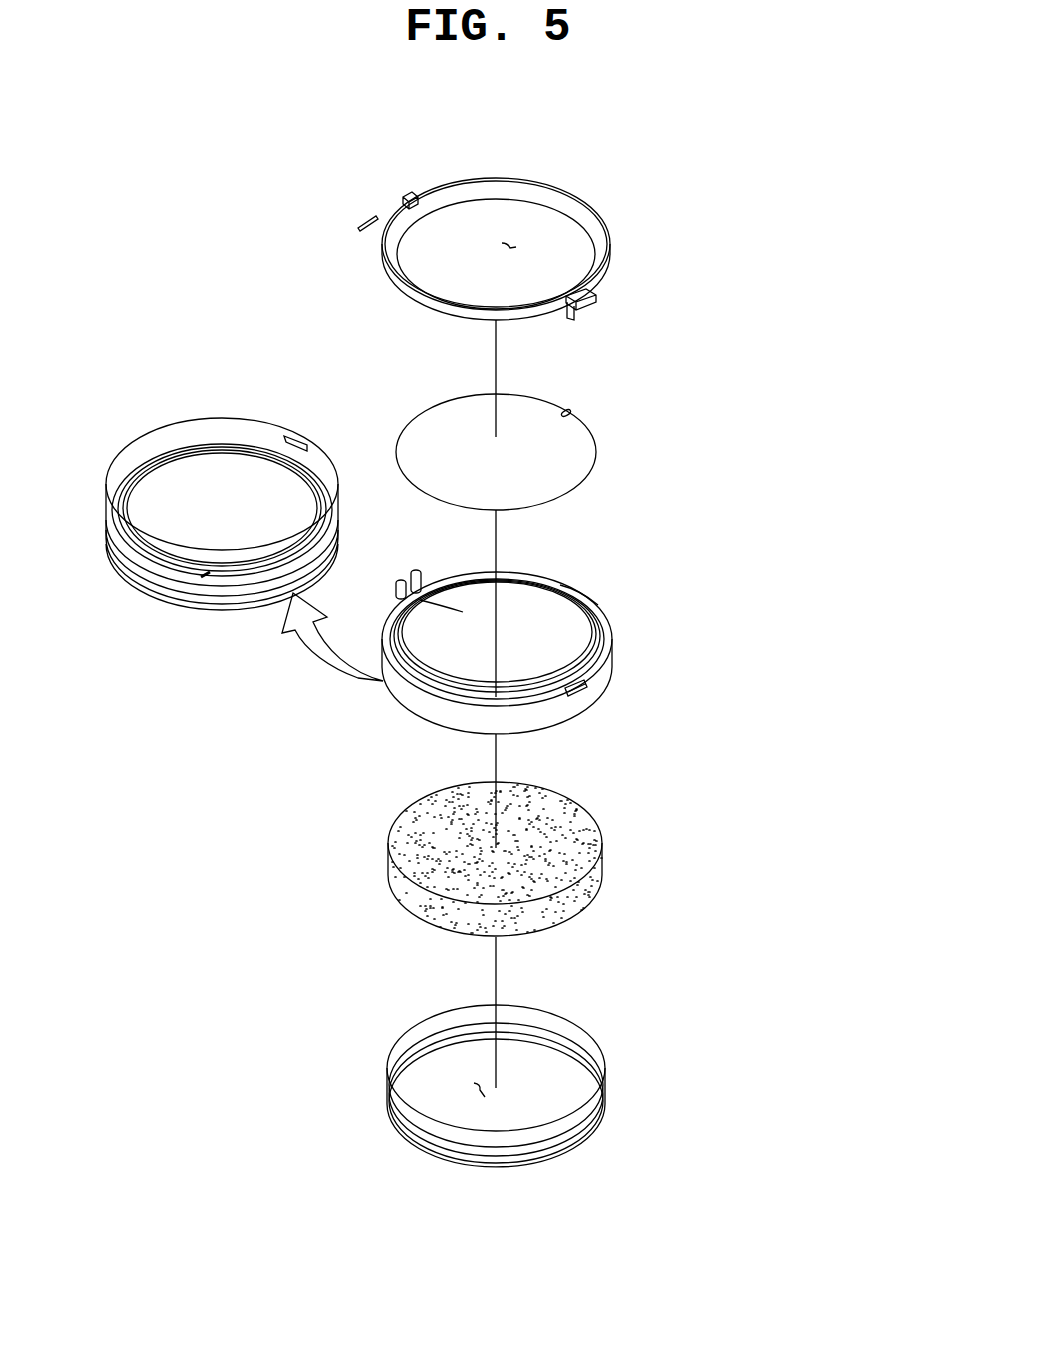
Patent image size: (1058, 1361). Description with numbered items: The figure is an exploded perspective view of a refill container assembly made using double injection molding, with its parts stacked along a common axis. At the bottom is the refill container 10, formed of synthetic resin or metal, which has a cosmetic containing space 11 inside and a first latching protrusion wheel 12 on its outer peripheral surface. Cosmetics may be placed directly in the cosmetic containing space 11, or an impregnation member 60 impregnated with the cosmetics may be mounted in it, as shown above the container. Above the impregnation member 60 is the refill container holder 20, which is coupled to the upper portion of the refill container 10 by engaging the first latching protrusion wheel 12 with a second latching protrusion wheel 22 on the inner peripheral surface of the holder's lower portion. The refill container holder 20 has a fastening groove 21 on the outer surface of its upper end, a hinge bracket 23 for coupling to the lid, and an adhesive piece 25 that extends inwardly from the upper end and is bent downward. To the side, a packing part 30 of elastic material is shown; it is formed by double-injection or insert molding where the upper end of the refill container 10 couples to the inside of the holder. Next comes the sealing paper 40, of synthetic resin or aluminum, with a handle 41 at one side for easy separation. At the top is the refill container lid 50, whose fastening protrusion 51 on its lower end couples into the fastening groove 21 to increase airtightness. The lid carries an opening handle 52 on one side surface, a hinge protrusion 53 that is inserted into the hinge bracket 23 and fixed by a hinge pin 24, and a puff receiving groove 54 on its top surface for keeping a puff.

The refill container 10 is at (625, 1080).
The cosmetic containing space 11 is at (477, 1090).
The first latching protrusion wheel 12 is at (557, 1147).
The refill container holder 20 is at (630, 632).
The fastening groove 21 is at (586, 683).
The second latching protrusion wheel 22 is at (463, 612).
The hinge bracket 23 is at (400, 578).
The hinge pin 24 is at (362, 218).
The adhesive piece 25 is at (598, 605).
The packing part 30 is at (207, 573).
The sealing paper 40 is at (603, 453).
The handle 41 is at (571, 413).
The refill container lid 50 is at (632, 236).
The fastening protrusion 51 is at (568, 316).
The opening handle 52 is at (596, 297).
The hinge protrusion 53 is at (411, 194).
The puff receiving groove 54 is at (513, 243).
The impregnation member 60 is at (578, 893).